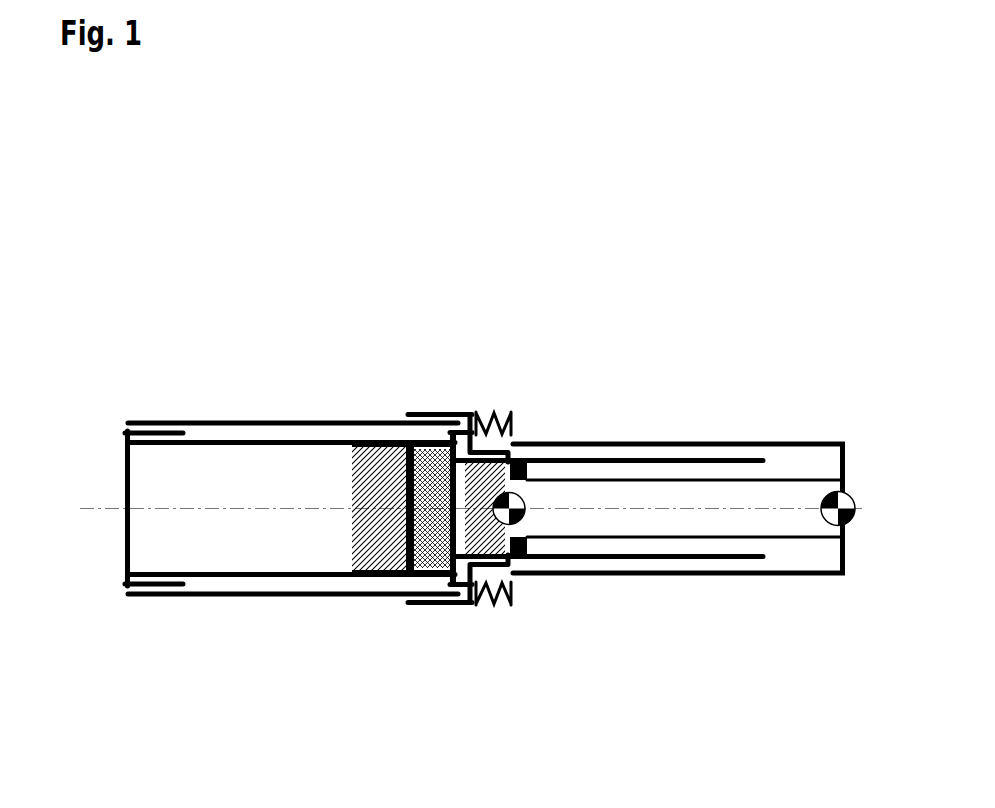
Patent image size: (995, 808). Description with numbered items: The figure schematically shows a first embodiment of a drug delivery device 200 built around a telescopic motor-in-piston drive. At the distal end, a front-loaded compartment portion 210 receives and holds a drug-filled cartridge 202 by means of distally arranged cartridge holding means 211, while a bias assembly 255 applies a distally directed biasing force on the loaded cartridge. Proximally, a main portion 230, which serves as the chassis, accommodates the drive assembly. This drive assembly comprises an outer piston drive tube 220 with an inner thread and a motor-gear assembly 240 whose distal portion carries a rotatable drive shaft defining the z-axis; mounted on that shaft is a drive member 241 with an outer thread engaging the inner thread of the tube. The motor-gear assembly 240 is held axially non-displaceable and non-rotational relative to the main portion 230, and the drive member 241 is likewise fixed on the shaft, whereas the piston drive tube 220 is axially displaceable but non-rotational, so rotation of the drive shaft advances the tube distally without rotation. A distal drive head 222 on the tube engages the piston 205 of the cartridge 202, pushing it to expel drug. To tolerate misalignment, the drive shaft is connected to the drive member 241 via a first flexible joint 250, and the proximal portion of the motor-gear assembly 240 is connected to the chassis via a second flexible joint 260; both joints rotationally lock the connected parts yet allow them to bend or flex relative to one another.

The drug delivery device 200 is at (620, 152).
The front-loaded compartment portion 210 is at (213, 422).
The drug-filled cartridge 202 is at (262, 578).
The cartridge holding means 211 is at (128, 580).
The piston 205 is at (372, 560).
The distal drive head 222 is at (428, 470).
The bias assembly 255 is at (466, 412).
The main portion 230 is at (593, 442).
The outer piston drive tube 220 is at (665, 458).
The motor-gear assembly 240 is at (720, 480).
The drive member 241 is at (485, 540).
The first flexible joint 250 is at (522, 517).
The second flexible joint 260 is at (832, 522).